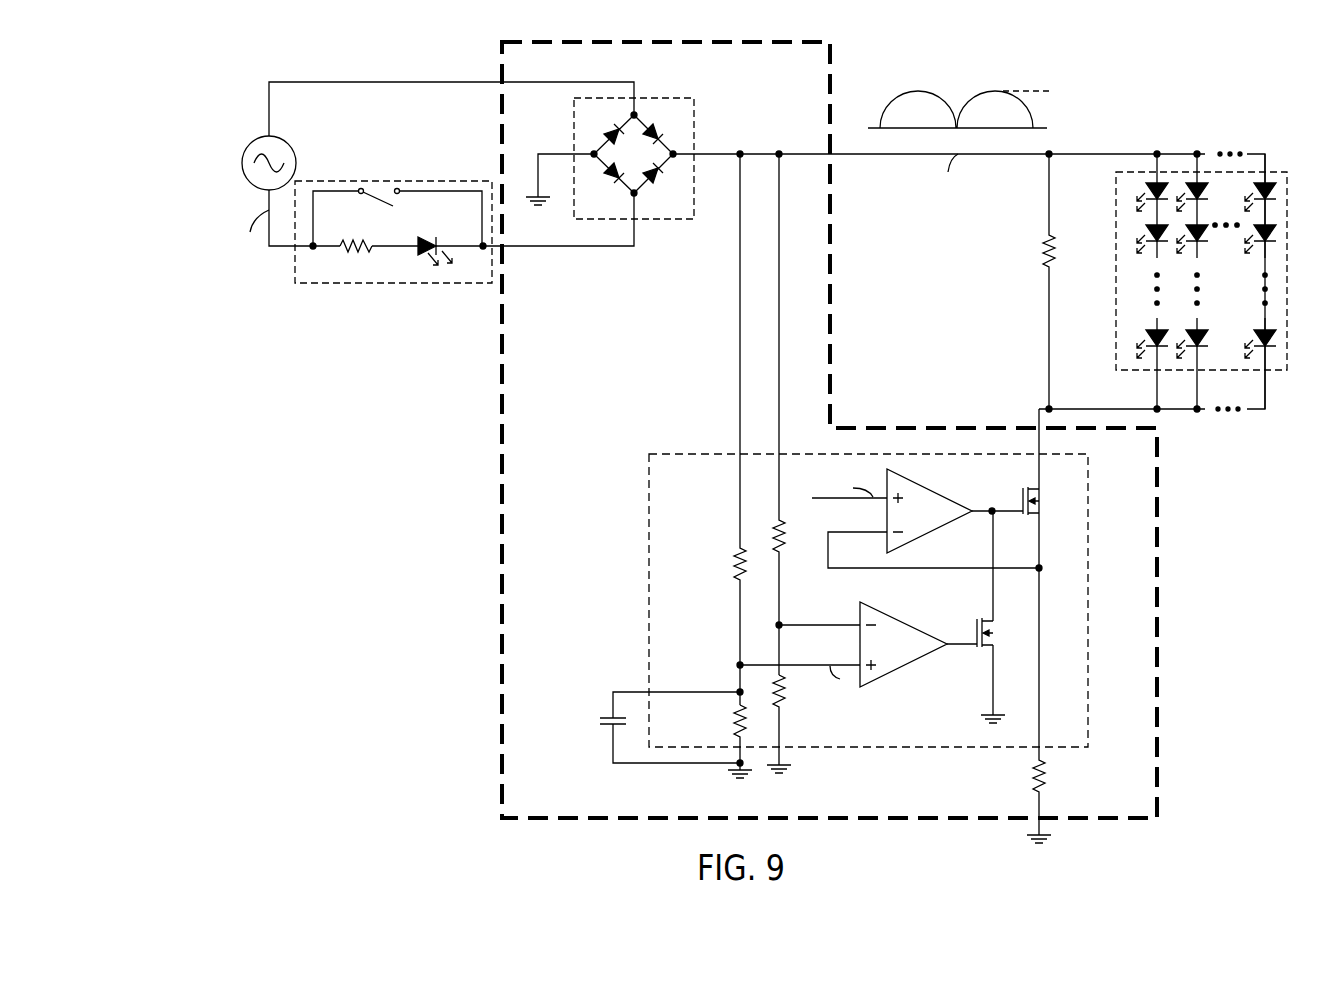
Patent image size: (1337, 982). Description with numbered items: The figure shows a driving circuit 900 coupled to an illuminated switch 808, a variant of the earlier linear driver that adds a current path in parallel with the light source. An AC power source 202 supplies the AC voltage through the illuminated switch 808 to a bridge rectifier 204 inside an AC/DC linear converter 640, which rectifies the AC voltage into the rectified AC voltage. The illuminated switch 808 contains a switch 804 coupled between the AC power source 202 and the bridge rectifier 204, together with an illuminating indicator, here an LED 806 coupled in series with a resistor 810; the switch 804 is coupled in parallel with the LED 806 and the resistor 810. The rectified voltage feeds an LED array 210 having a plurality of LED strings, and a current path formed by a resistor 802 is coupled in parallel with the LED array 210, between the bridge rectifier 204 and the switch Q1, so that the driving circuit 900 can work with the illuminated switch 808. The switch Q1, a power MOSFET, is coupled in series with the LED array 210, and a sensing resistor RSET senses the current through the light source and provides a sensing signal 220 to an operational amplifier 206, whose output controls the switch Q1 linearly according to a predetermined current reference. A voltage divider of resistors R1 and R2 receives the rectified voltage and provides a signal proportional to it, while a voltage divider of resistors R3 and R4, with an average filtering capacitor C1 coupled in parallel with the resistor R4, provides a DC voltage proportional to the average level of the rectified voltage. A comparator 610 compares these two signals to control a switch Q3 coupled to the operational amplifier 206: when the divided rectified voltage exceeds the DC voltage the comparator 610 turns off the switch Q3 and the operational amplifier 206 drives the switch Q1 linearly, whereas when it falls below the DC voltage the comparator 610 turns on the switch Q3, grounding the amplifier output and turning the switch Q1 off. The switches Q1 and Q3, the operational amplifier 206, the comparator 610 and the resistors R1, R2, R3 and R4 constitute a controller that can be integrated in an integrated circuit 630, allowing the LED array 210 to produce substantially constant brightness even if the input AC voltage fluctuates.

The driving circuit 900 is at (352, 461).
The AC/DC linear converter 640 is at (722, 42).
The AC power source 202 is at (250, 145).
The illuminated switch 808 is at (403, 181).
The switch 804 is at (367, 200).
The LED 806 is at (433, 237).
The resistor 810 is at (368, 248).
The bridge rectifier 204 is at (651, 98).
The resistor 802 is at (1047, 243).
The LED array 210 is at (1116, 293).
The integrated circuit 630 is at (1088, 548).
The operational amplifier 206 is at (951, 494).
The sensing signal 220 is at (917, 568).
The comparator 610 is at (887, 612).
The resistor R1 is at (783, 532).
The resistor R2 is at (786, 695).
The resistor R3 is at (733, 568).
The resistor R4 is at (733, 708).
The average filtering capacitor C1 is at (607, 713).
The switch Q1 is at (1041, 499).
The switch Q3 is at (994, 637).
The sensing resistor RSET is at (1047, 780).